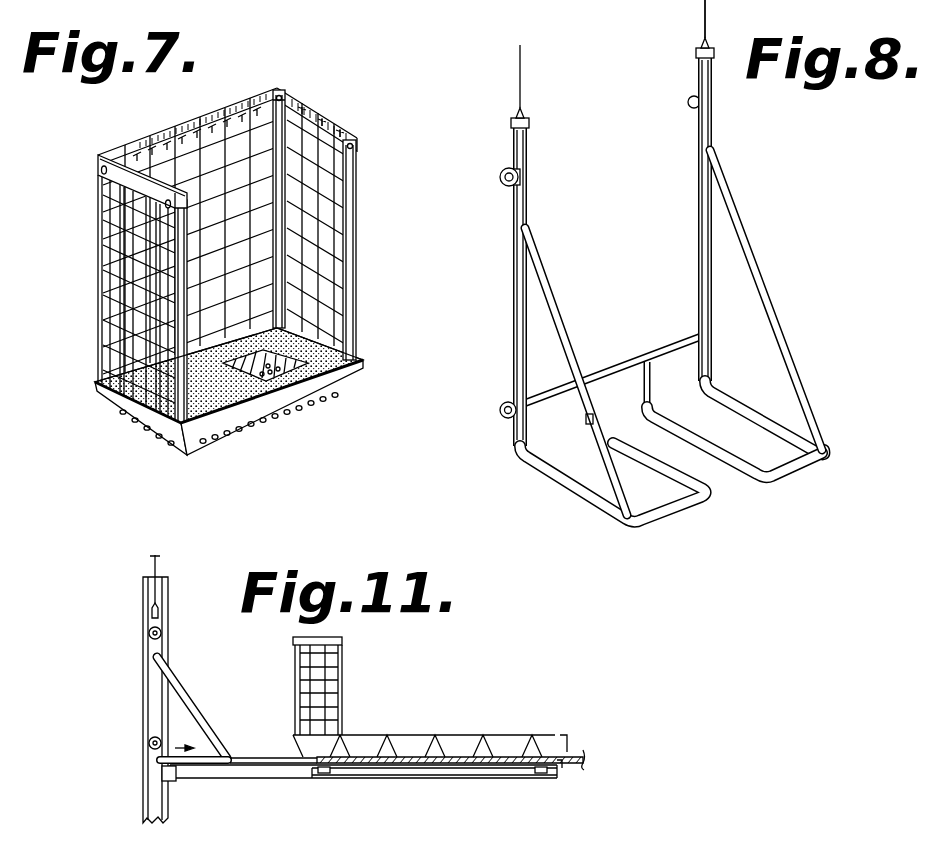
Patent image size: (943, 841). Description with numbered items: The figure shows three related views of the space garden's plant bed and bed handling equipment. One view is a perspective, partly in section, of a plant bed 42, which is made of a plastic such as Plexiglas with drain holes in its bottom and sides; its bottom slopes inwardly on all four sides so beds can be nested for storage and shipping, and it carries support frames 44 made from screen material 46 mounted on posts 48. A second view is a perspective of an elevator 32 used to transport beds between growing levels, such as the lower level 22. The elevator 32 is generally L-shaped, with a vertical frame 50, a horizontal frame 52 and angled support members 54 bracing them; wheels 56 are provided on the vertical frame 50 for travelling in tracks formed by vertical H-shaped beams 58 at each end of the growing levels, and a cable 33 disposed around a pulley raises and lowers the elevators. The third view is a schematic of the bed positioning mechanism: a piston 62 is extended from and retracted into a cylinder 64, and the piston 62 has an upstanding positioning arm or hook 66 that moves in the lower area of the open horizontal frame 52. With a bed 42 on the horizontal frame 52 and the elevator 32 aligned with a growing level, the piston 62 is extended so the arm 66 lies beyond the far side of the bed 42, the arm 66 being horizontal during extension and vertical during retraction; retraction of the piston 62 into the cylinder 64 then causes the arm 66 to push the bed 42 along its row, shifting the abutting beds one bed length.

In FIG. 11, the lower level 22 is at (332, 689).
In FIG. 8, the elevator 32 is at (635, 265).
In FIG. 11, the elevator 32 is at (245, 685).
In FIG. 8, the cable 33 is at (707, 13).
In FIG. 7, the bed 42 is at (228, 259).
In FIG. 11, the bed 42 is at (407, 726).
In FIG. 7, the support frame 44 is at (100, 165).
In FIG. 7, the screen material 46 is at (143, 254).
In FIG. 11, the screen material 46 is at (298, 700).
In FIG. 7, the post 48 is at (312, 122).
In FIG. 11, the post 48 is at (338, 645).
In FIG. 8, the vertical frame 50 is at (703, 85).
In FIG. 8, the horizontal frame 52 is at (709, 498).
In FIG. 8, the angled support member 54 is at (747, 262).
In FIG. 8, the wheel 56 is at (507, 182).
In FIG. 11, the vertical H-shaped beam 58 is at (130, 600).
In FIG. 11, the piston 62 is at (275, 802).
In FIG. 11, the cylinder 64 is at (363, 772).
In FIG. 11, the positioning arm 66 is at (160, 750).